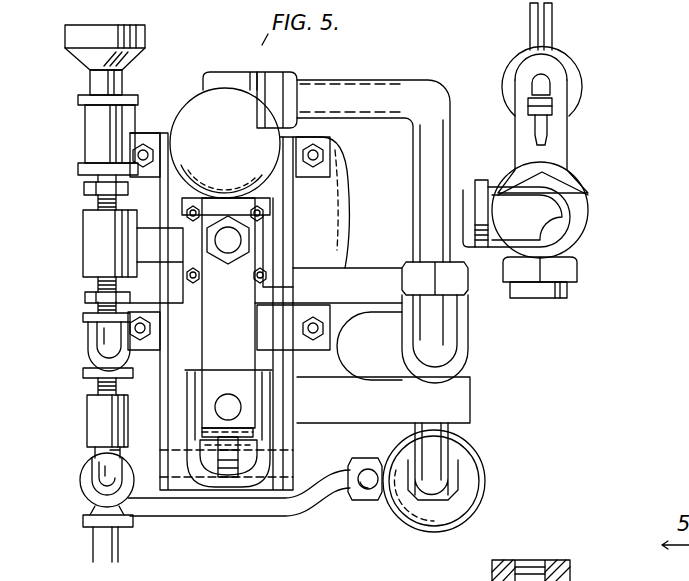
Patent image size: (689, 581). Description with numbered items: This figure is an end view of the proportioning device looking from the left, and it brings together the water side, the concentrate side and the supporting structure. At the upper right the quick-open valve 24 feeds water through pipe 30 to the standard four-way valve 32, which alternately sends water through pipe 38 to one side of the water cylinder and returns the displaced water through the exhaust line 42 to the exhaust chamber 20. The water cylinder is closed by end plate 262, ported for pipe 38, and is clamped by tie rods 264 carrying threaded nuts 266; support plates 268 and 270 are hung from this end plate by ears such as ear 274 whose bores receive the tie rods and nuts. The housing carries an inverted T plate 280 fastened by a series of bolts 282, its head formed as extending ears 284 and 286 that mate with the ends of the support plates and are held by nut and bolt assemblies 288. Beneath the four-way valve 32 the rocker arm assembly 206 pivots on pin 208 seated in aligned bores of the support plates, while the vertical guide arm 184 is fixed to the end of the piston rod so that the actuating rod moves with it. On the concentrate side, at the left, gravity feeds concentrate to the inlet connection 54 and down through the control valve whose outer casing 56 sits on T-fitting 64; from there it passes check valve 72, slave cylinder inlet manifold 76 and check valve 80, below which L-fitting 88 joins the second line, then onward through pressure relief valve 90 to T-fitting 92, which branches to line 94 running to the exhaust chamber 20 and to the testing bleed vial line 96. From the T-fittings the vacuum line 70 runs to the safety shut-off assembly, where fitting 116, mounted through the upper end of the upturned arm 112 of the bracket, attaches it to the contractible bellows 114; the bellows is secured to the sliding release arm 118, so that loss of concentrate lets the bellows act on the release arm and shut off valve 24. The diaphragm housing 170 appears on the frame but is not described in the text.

The exhaust chamber 20 is at (412, 512).
The valve 24 is at (585, 217).
The pipe 30 is at (463, 192).
The four-way valve 32 is at (437, 403).
The pipe 38 is at (392, 87).
The exhaust line 42 is at (445, 452).
The concentrate inlet connection 54 is at (572, 562).
The outer casing 56 is at (75, 42).
The T-fitting 64 is at (97, 118).
The vacuum line 70 is at (548, 133).
The check valve 72 is at (85, 188).
The slave cylinder inlet manifold 76 is at (85, 233).
The check valve 80 is at (85, 298).
The L-fitting 88 is at (100, 335).
The pressure relief valve 90 is at (97, 413).
The T-fitting 92 is at (87, 478).
The line 94 is at (273, 512).
The testing bleed vial line 96 is at (102, 543).
The upturned arm 112 is at (520, 127).
The contractible bellows 114 is at (567, 72).
The fitting 116 is at (535, 77).
The release arm 118 is at (532, 32).
The diaphragm housing 170 is at (205, 103).
The vertical guide arm 184 is at (230, 307).
The rocker arm assembly 206 is at (230, 473).
The pin 208 is at (277, 448).
The end plate 262 is at (330, 198).
The tie rods 264 is at (313, 150).
The threaded nuts 266 is at (325, 156).
The support plate 268 is at (165, 397).
The support plate 270 is at (288, 390).
The ear 274 is at (320, 222).
The plate 280 is at (263, 295).
The bolts 282 is at (257, 205).
The ear 284 is at (185, 334).
The ear 286 is at (285, 339).
The nut and bolt assemblies 288 is at (330, 313).